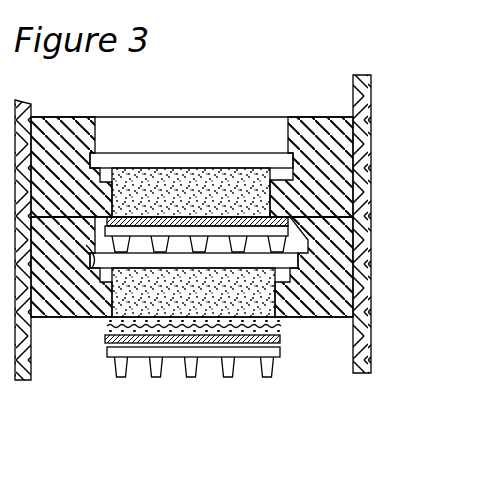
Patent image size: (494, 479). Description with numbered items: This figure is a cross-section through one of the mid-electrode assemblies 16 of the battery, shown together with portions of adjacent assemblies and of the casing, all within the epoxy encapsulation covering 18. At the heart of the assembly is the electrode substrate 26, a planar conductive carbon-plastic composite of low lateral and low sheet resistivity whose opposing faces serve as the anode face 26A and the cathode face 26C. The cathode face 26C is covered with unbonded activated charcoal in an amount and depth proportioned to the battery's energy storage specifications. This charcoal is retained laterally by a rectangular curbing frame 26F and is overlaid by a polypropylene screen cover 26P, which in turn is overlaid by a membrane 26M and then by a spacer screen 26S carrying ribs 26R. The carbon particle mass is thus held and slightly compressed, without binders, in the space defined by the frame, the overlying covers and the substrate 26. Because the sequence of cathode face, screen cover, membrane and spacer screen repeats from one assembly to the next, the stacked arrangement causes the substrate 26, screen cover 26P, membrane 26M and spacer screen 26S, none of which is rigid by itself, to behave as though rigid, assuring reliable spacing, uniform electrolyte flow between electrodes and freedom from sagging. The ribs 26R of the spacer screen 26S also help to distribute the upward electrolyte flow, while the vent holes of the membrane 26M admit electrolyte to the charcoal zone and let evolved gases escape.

The mid-electrode assembly 16 is at (62, 148).
The ceramic insert C is at (160, 187).
The epoxy encapsulation covering 18 is at (350, 102).
The electrode substrate 26 is at (282, 260).
The anode face 26A is at (280, 243).
The curbing frame 26F is at (93, 266).
The cathode face 26C is at (272, 262).
The polypropylene screen cover 26P is at (102, 332).
The membrane 26M is at (215, 375).
The spacer screen 26S is at (133, 350).
The ribs 26R is at (197, 374).